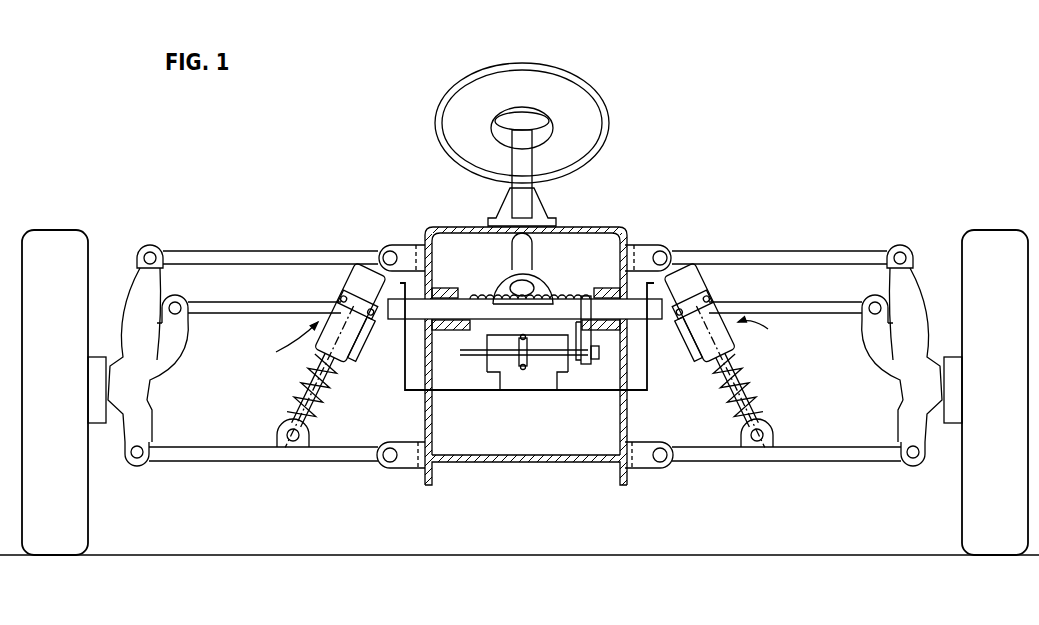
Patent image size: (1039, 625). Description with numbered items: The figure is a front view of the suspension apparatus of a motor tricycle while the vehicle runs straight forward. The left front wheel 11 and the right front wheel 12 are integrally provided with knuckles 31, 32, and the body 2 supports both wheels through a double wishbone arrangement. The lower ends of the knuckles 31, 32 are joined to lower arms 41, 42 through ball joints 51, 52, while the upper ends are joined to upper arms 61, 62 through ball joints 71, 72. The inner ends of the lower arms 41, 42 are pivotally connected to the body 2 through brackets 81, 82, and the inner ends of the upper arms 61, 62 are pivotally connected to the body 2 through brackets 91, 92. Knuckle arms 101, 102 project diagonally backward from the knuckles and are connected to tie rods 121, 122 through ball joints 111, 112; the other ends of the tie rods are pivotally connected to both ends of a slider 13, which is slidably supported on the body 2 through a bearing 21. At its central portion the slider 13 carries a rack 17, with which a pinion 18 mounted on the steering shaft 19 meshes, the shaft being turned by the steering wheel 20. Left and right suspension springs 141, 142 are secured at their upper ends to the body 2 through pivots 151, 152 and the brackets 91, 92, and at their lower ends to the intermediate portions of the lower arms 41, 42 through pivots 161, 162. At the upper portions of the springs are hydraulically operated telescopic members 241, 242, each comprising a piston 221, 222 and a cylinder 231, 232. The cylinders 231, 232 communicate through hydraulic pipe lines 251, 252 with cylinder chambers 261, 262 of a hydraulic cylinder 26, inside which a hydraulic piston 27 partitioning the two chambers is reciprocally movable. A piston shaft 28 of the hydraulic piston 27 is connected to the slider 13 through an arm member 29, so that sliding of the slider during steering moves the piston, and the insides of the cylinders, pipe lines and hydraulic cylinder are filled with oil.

The left front wheel 11 is at (998, 558).
The right front wheel 12 is at (52, 558).
The body 2 is at (450, 228).
The knuckle 31 is at (927, 290).
The knuckle 32 is at (143, 284).
The lower arm 41 is at (822, 463).
The lower arm 42 is at (228, 463).
The ball joint 51 is at (913, 467).
The ball joint 52 is at (137, 467).
The upper arm 61 is at (787, 250).
The upper arm 62 is at (268, 250).
The ball joint 71 is at (900, 245).
The ball joint 72 is at (152, 245).
The bracket 81 is at (642, 465).
The bracket 82 is at (397, 462).
The bracket 91 is at (658, 247).
The bracket 92 is at (402, 245).
The knuckle arm 101 is at (885, 352).
The knuckle arm 102 is at (167, 347).
The ball joint 111 is at (866, 298).
The ball joint 112 is at (187, 297).
The tie rod 121 is at (833, 313).
The tie rod 122 is at (236, 314).
The slider 13 is at (471, 297).
The suspension spring 141 is at (758, 358).
The suspension spring 142 is at (308, 356).
The pivot 151 is at (665, 250).
The pivot 152 is at (388, 250).
The pivot 161 is at (757, 441).
The pivot 162 is at (293, 441).
The rack 17 is at (580, 300).
The pinion 18 is at (541, 292).
The steering shaft 19 is at (530, 203).
The steering wheel 20 is at (610, 118).
The bearing 21 is at (602, 288).
The piston 221 is at (690, 292).
The piston 222 is at (376, 344).
The cylinder 231 is at (711, 296).
The cylinder 232 is at (342, 297).
The telescopic member 241 is at (770, 329).
The telescopic member 242 is at (279, 345).
The hydraulic pipe line 251 is at (648, 387).
The hydraulic pipe line 252 is at (406, 388).
The hydraulic cylinder 26 is at (535, 392).
The cylinder chamber 261 is at (562, 395).
The cylinder chamber 262 is at (507, 380).
The hydraulic piston 27 is at (520, 368).
The piston shaft 28 is at (543, 372).
The arm member 29 is at (597, 340).